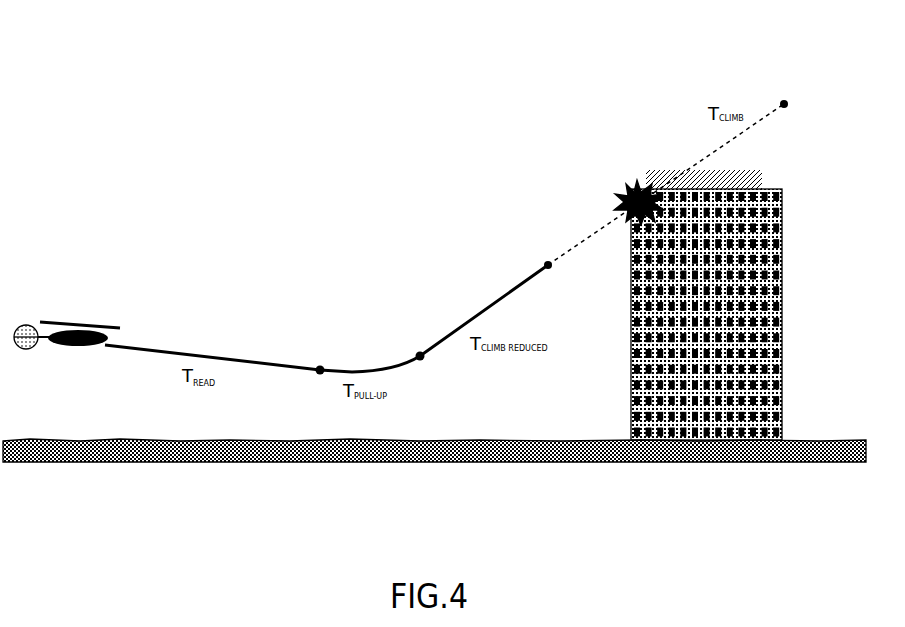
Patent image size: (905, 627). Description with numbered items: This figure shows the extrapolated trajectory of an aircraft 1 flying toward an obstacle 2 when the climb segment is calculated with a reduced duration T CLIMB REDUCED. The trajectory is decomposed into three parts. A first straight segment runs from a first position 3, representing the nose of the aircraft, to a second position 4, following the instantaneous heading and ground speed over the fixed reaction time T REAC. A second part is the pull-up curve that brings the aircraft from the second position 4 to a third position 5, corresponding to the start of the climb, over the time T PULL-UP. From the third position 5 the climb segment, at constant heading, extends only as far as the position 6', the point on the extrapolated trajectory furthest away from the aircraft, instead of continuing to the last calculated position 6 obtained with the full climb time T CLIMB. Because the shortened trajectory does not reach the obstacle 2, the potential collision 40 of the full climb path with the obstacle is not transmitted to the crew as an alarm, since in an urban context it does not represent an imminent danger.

The aircraft 1 is at (74, 305).
The obstacle 2 is at (788, 212).
The first position 3 is at (99, 352).
The second position 4 is at (321, 362).
The third position 5 is at (418, 348).
The last calculated position 6 is at (788, 72).
The position on the extrapolated trajectory furthest away from the aircraft 6' is at (532, 239).
The potential collision 40 is at (623, 189).